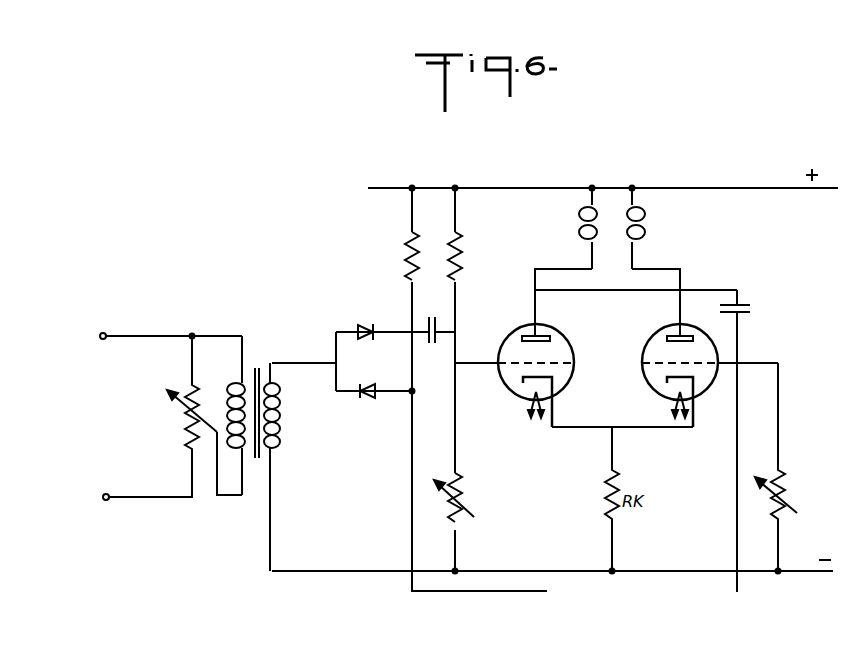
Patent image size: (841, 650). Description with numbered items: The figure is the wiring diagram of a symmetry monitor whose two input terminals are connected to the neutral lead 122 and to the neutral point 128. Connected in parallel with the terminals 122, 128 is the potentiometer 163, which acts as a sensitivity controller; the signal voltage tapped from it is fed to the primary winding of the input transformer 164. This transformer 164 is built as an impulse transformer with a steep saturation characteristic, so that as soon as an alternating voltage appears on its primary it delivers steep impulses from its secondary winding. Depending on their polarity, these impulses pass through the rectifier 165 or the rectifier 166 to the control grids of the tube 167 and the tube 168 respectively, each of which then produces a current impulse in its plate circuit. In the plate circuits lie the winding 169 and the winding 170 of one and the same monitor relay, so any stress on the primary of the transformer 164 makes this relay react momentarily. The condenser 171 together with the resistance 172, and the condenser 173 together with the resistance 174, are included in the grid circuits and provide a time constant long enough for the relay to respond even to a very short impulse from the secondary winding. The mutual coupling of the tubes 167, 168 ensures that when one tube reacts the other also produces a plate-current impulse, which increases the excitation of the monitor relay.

The neutral point 128 is at (146, 339).
The neutral lead 122 is at (121, 499).
The potentiometer 163 is at (187, 425).
The input transformer 164 is at (258, 366).
The rectifier 165 is at (364, 324).
The rectifier 166 is at (368, 400).
The condenser 171 is at (437, 341).
The tube 167 is at (568, 342).
The tube 168 is at (648, 338).
The winding 169 is at (590, 227).
The winding 170 is at (638, 230).
The condenser 173 is at (740, 313).
The resistance 172 is at (463, 522).
The resistance 174 is at (780, 520).